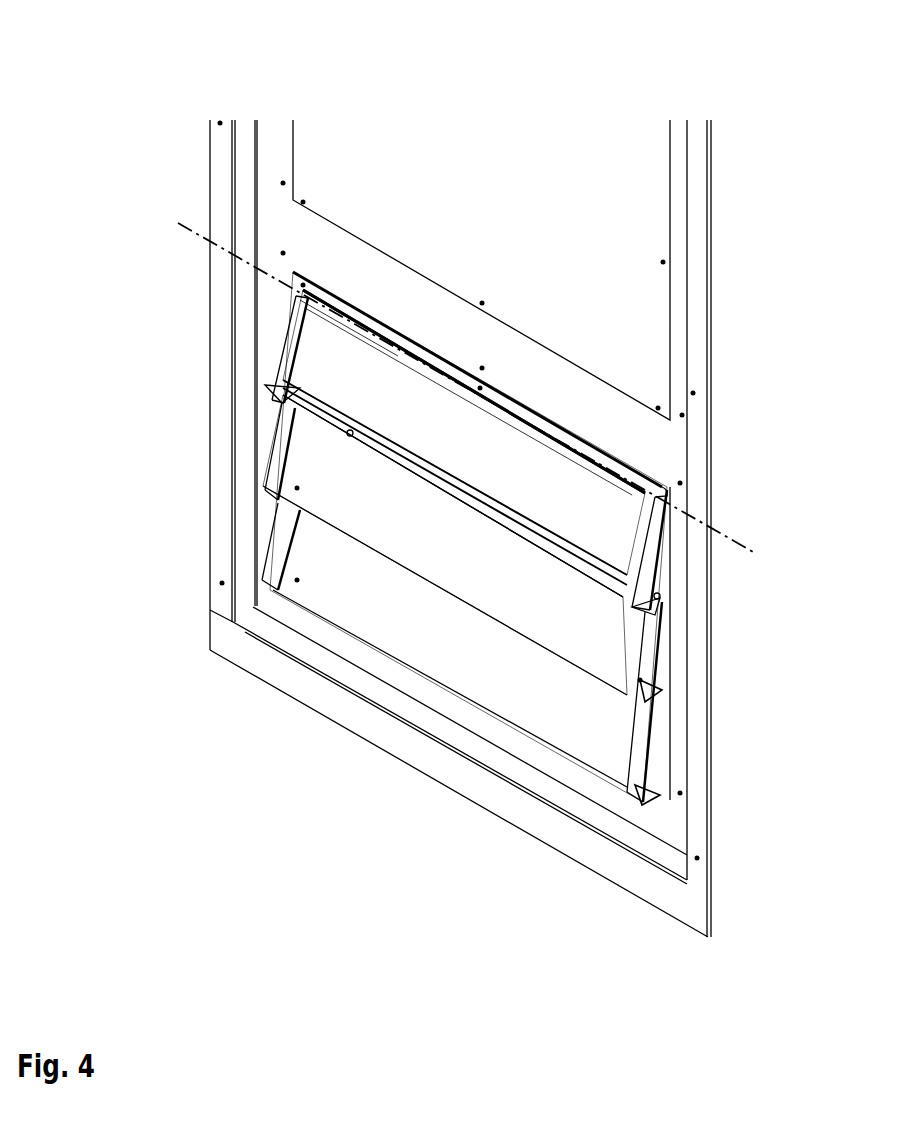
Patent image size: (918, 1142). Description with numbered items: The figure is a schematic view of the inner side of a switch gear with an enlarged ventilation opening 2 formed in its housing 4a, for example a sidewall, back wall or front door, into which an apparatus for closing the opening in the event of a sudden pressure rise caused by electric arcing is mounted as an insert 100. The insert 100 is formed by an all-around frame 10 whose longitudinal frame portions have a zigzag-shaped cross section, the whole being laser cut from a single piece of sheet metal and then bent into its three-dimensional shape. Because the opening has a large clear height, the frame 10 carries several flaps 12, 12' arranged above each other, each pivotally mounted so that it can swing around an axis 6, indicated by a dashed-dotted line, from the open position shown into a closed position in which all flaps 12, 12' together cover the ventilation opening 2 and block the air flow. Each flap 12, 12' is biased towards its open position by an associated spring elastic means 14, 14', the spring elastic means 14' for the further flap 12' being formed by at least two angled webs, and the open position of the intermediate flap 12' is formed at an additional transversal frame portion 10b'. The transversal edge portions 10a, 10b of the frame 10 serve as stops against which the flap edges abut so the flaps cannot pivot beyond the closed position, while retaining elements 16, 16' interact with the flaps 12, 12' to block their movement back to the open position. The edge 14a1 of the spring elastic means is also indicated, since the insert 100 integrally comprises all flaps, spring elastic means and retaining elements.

The ventilation opening 2 is at (657, 575).
The housing 4a is at (494, 202).
The axis 6 is at (733, 545).
The insert 100 is at (290, 272).
The frame 10 is at (285, 337).
The transversal edge portion of the frame 10a is at (648, 695).
The transversal edge portion of the frame 10b is at (480, 264).
The additional transversal frame portion 10b' is at (544, 378).
The flap 12 is at (464, 432).
The further flap 12' is at (445, 545).
The spring elastic means 14 is at (553, 389).
The spring elastic means 14' is at (544, 478).
The profile edge 14a1 is at (398, 348).
The retaining element 16 is at (726, 552).
The retaining element 16' is at (731, 731).